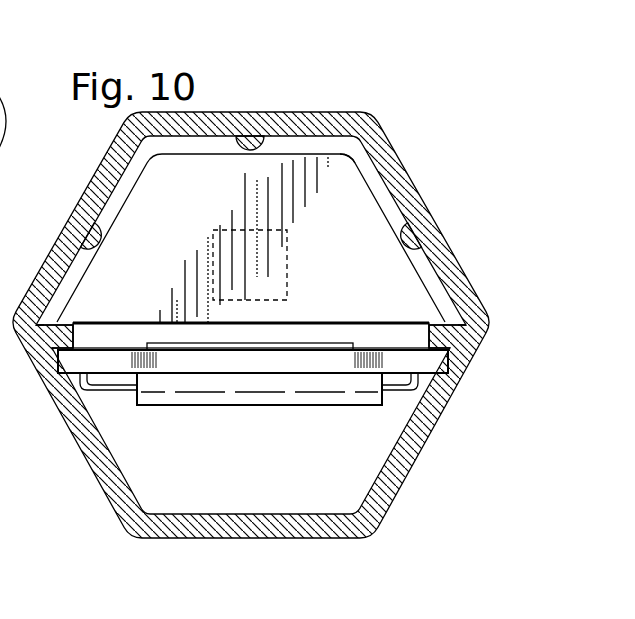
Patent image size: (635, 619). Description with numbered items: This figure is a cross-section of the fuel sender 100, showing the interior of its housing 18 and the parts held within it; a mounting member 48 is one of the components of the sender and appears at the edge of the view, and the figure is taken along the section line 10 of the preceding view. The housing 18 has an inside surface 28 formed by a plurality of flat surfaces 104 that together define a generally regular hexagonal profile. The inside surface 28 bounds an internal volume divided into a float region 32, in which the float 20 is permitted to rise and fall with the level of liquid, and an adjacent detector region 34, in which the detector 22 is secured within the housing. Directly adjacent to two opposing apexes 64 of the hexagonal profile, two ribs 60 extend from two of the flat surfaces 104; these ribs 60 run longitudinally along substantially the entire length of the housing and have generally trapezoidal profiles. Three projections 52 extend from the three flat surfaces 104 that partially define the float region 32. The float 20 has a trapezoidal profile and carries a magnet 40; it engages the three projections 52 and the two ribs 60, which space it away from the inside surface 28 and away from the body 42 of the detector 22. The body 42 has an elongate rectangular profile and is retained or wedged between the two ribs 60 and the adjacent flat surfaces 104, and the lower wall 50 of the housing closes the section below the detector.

The luminaire 10 is at (424, 36).
The fuel sender 100 is at (367, 75).
The housing 18 is at (311, 106).
The float 20 is at (323, 152).
The float region 32 is at (363, 152).
The flat surfaces 104 is at (185, 138).
The projections 52 is at (253, 156).
The apexes 64 is at (456, 304).
The ribs 60 is at (440, 322).
The body 42 is at (117, 346).
The magnet 40 is at (287, 290).
The housing side wall 50 is at (72, 440).
The detector 22 is at (183, 413).
The inside surface 28 is at (240, 510).
The detector region 34 is at (391, 414).
The mounting member 48 is at (10, 108).